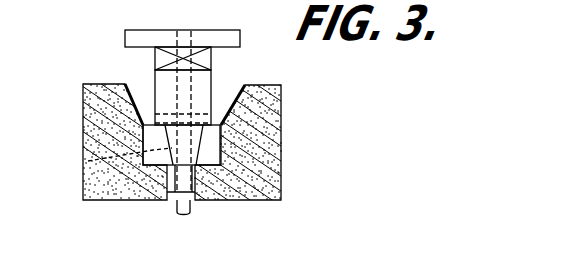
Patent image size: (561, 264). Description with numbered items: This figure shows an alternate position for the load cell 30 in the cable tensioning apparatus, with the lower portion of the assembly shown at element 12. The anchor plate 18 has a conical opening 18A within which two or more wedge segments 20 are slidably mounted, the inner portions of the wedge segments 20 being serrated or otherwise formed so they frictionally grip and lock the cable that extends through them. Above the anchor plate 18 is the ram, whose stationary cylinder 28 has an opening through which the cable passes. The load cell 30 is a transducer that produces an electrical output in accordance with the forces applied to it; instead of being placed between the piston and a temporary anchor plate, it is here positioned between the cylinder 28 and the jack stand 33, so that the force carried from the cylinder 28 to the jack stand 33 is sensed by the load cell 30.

The bolt tip 12 is at (195, 135).
The anchor plate 18 is at (153, 138).
The conical opening 18A is at (88, 161).
The wedge segments 20 is at (284, 104).
The stationary cylinder 28 is at (135, 40).
The load cell 30 is at (158, 58).
The jack stand 33 is at (203, 83).